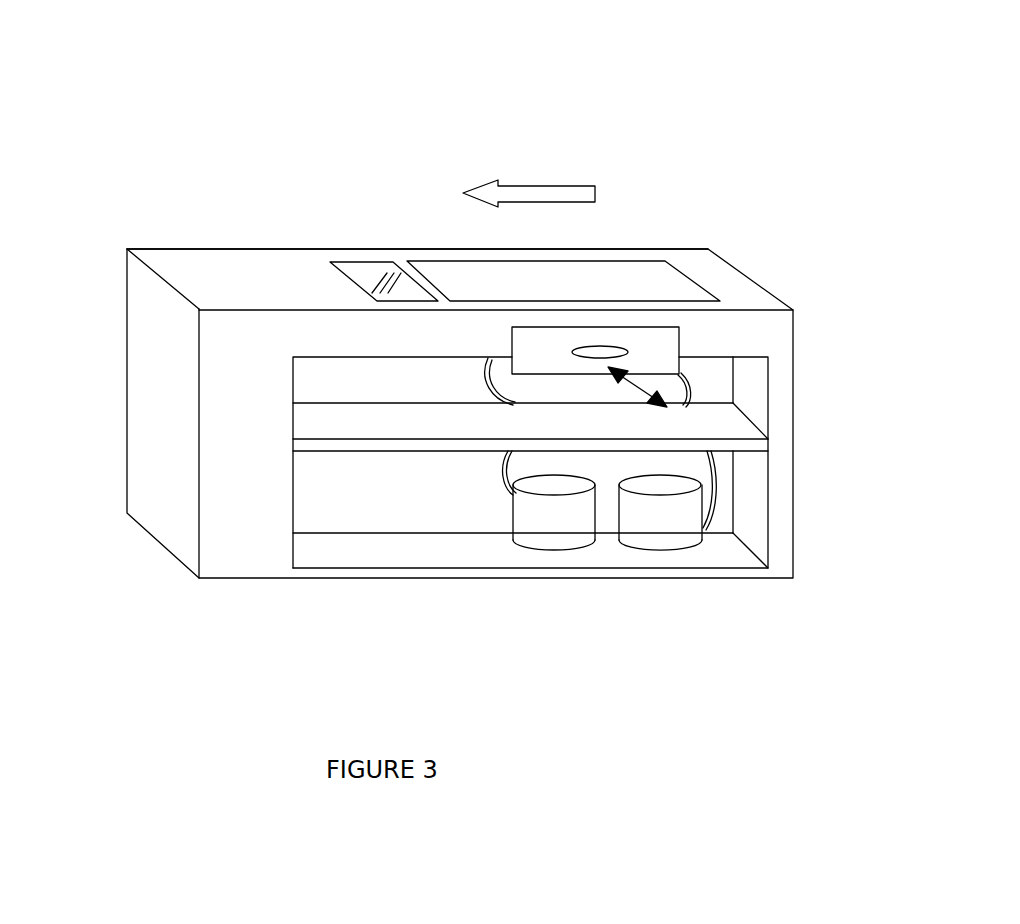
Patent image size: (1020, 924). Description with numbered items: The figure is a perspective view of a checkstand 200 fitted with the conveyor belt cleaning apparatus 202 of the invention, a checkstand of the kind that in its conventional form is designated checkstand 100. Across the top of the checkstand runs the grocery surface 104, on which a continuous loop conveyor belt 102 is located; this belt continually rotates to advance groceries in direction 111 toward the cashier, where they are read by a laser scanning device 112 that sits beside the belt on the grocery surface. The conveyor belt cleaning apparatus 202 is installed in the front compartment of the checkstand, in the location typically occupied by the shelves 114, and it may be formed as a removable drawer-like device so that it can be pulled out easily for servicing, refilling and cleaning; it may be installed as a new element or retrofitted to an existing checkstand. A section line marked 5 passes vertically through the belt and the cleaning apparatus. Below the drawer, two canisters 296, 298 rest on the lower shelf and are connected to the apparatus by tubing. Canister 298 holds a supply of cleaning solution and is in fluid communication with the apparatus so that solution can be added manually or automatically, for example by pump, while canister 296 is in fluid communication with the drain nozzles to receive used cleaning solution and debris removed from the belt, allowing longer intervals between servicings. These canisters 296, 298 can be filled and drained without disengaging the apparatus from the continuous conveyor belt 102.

The checkstand 100 is at (150, 550).
The checkstand 200 is at (222, 208).
The grocery surface 104 is at (192, 262).
The laser scanning device 112 is at (358, 273).
The continuous loop conveyor belt 102 is at (678, 285).
The direction 111 is at (528, 192).
The section line 5 is at (613, 400).
The conveyor belt cleaning apparatus 202 is at (662, 343).
The shelves 114 is at (456, 412).
The canister 296 is at (559, 535).
The canister 298 is at (678, 535).